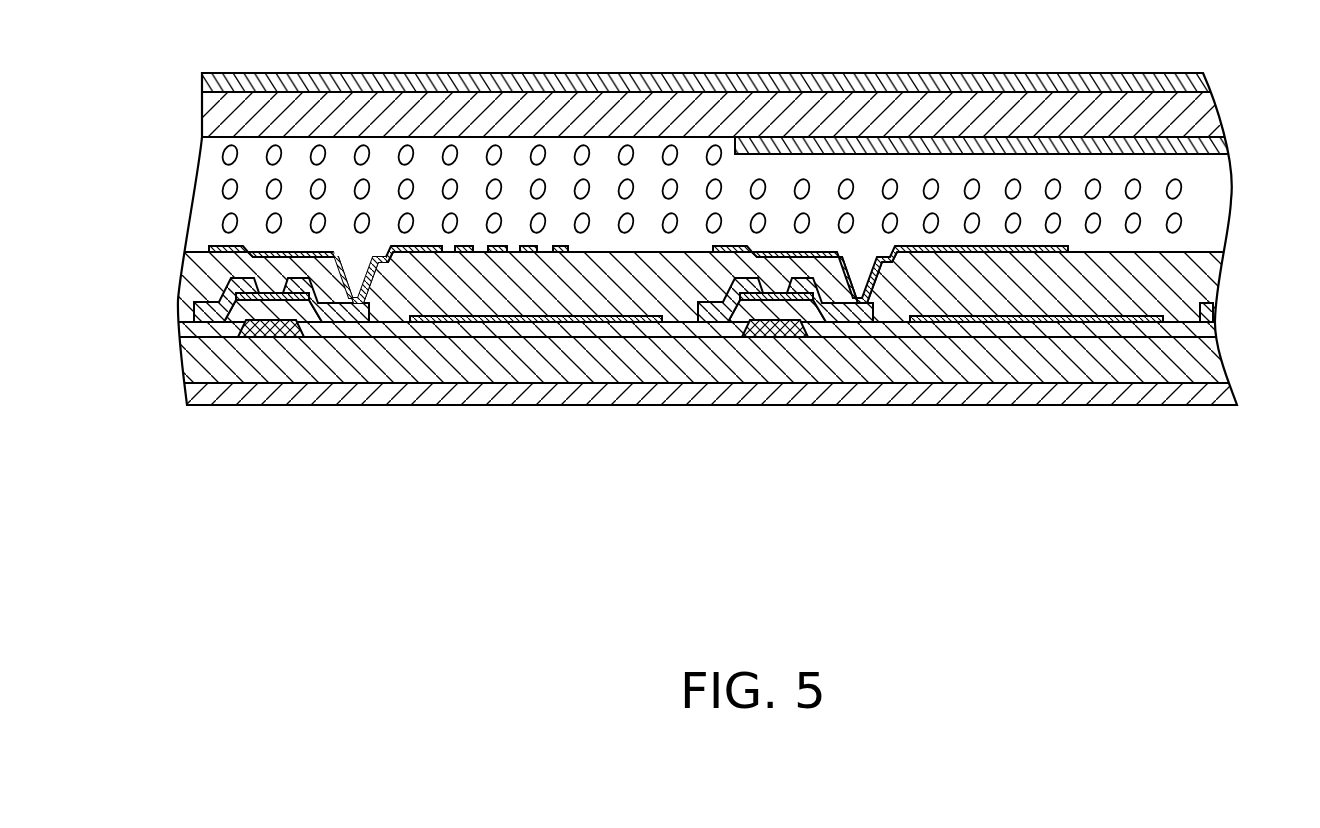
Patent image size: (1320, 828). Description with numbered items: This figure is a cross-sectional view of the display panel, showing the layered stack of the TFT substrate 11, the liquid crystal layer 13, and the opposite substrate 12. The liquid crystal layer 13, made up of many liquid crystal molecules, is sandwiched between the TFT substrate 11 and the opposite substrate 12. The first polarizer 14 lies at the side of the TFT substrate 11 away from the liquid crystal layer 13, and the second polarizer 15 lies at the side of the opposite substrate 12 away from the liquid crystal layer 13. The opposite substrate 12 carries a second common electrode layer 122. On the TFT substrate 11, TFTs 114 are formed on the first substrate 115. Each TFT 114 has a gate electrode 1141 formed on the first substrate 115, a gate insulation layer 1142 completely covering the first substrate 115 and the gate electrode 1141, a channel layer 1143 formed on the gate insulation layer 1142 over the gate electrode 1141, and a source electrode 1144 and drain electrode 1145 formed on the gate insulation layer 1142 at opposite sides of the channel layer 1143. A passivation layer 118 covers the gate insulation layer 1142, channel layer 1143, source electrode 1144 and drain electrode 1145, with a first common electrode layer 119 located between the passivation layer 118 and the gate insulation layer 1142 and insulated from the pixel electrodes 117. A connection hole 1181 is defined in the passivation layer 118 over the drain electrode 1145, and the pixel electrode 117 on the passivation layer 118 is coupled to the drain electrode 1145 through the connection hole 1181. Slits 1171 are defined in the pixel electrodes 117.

The TFT substrate 11 is at (696, 354).
The opposite substrate 12 is at (735, 151).
The liquid crystal layer 13 is at (203, 183).
The first polarizer 14 is at (738, 396).
The second polarizer 15 is at (202, 82).
The TFT 114 is at (255, 387).
The first substrate 115 is at (195, 357).
The pixel electrode 117 is at (580, 346).
The passivation layer 118 is at (195, 260).
The first common electrode layer 119 is at (640, 320).
The second common electrode layer 122 is at (1157, 146).
The gate electrode 1141 is at (262, 322).
The gate insulation layer 1142 is at (310, 322).
The channel layer 1143 is at (300, 326).
The source electrode 1144 is at (212, 338).
The drain electrode 1145 is at (357, 268).
The slit 1171 is at (512, 247).
The connection hole 1181 is at (352, 313).